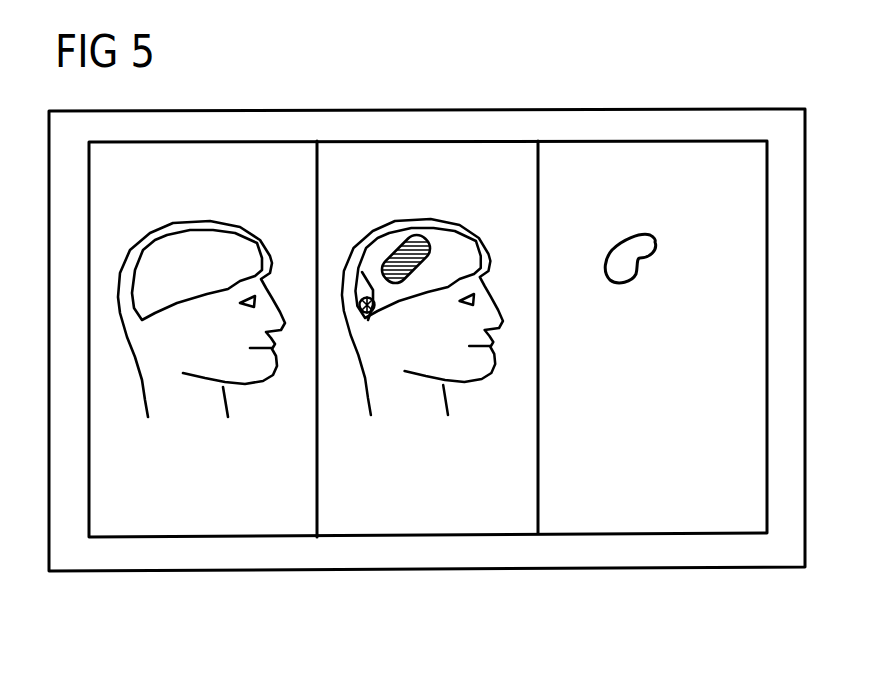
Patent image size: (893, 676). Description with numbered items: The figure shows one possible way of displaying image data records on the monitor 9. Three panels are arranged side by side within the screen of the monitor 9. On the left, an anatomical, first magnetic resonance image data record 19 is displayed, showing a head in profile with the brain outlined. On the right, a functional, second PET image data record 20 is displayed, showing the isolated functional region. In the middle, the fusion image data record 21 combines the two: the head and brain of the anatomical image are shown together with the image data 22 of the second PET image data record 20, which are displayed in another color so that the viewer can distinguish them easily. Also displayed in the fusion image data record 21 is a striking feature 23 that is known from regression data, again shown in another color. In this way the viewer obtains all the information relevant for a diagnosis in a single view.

The monitor 9 is at (688, 107).
The first magnetic resonance image data record 19 is at (192, 537).
The fusion image data record 21 is at (436, 337).
The second PET image data record 20 is at (625, 535).
The image data 22 is at (413, 226).
The striking feature 23 is at (364, 271).